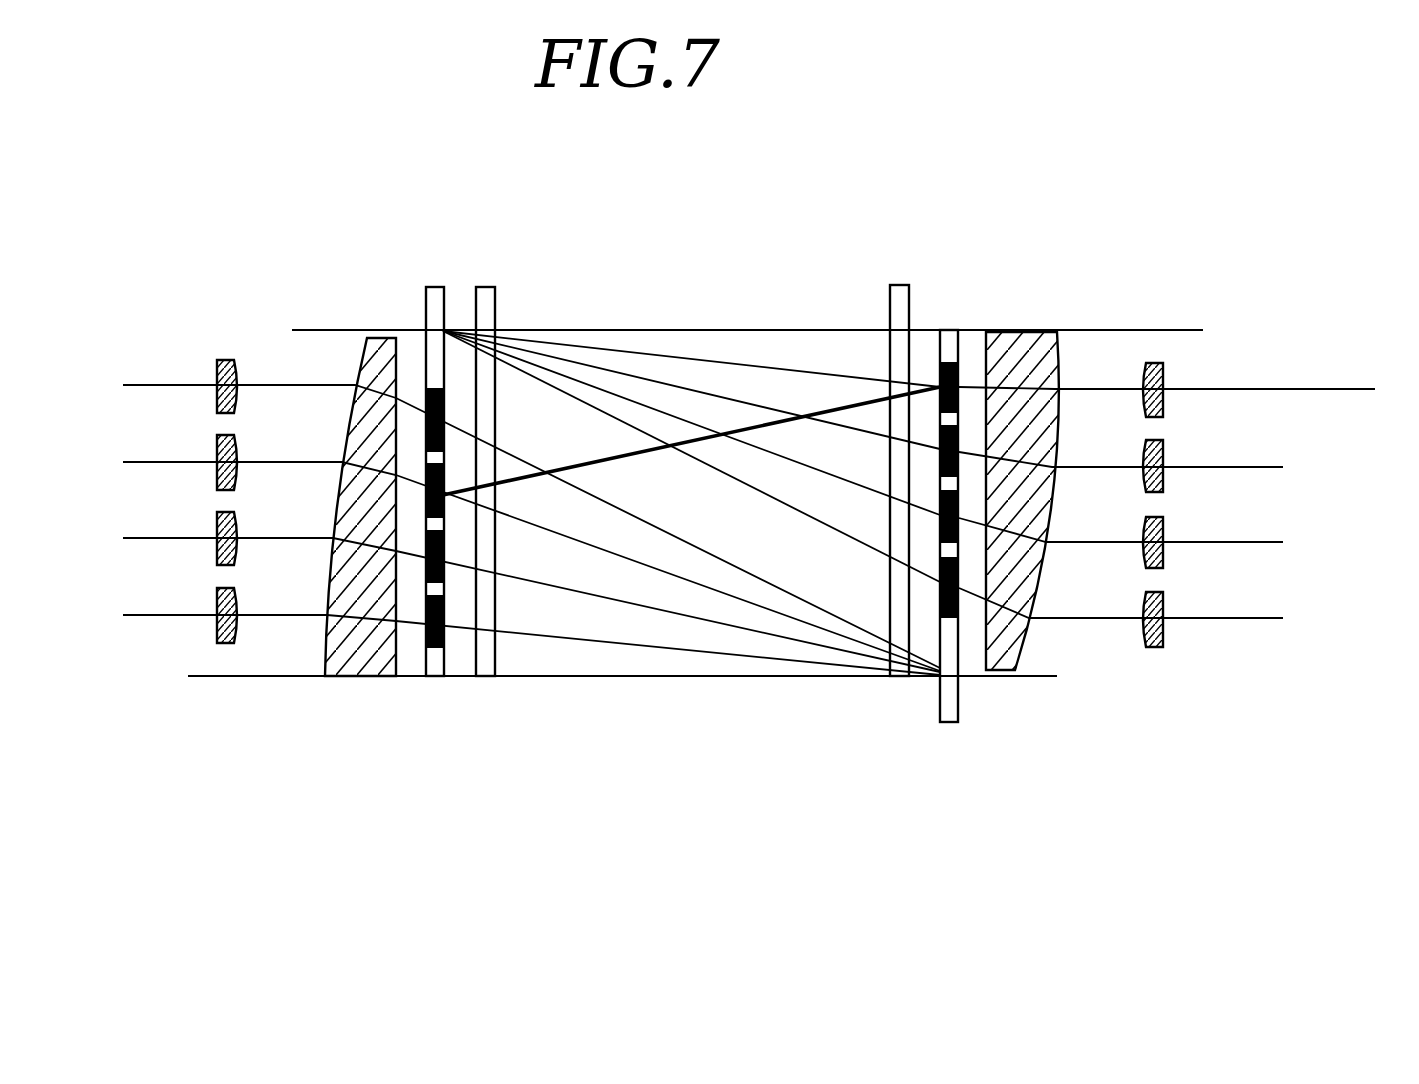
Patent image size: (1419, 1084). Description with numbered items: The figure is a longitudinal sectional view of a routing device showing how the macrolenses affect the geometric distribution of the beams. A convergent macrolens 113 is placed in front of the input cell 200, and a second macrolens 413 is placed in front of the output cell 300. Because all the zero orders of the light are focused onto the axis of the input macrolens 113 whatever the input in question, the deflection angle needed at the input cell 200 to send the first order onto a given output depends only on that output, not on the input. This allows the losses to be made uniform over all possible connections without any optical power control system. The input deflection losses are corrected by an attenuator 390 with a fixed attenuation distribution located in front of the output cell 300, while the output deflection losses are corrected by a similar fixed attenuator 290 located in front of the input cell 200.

The macrolens 113 is at (387, 335).
The input cell 200 is at (435, 653).
The attenuator with fixed attenuation distribution 290 is at (486, 300).
The output cell 300 is at (949, 697).
The attenuator with fixed attenuation distribution 390 is at (898, 292).
The macrolens 413 is at (1028, 343).